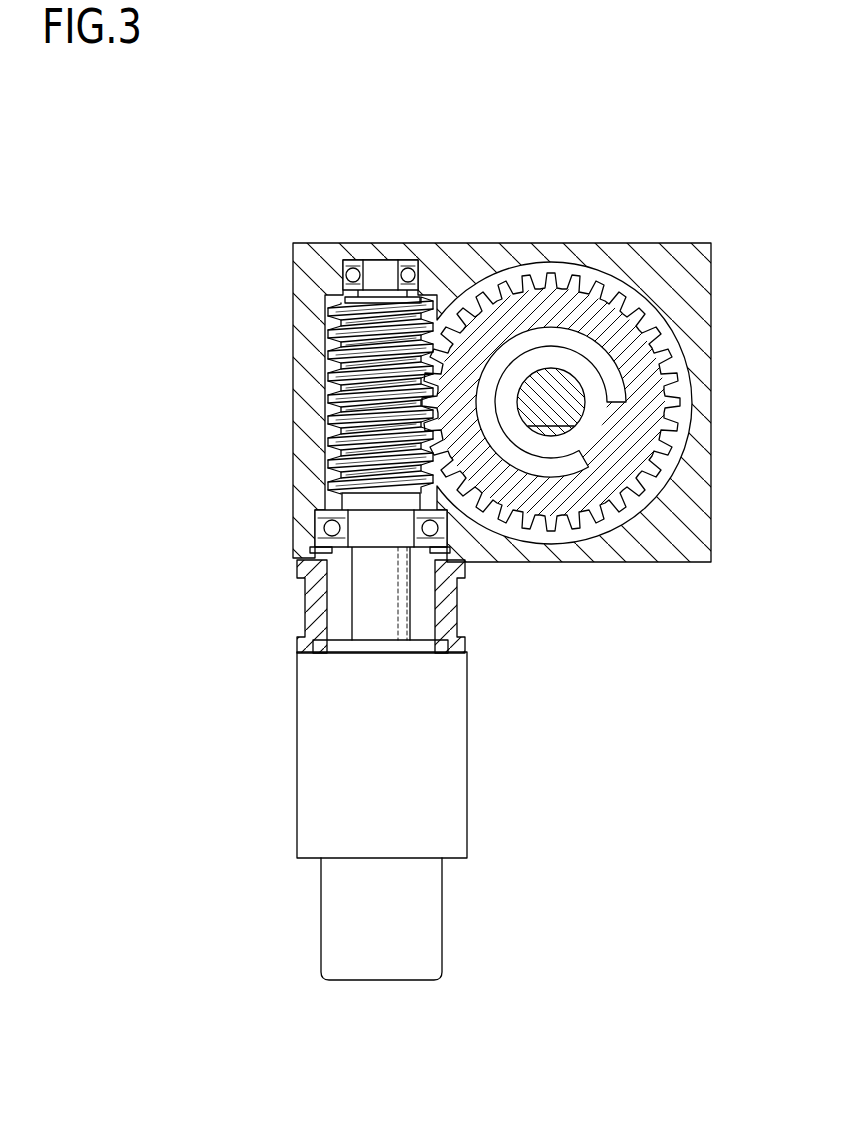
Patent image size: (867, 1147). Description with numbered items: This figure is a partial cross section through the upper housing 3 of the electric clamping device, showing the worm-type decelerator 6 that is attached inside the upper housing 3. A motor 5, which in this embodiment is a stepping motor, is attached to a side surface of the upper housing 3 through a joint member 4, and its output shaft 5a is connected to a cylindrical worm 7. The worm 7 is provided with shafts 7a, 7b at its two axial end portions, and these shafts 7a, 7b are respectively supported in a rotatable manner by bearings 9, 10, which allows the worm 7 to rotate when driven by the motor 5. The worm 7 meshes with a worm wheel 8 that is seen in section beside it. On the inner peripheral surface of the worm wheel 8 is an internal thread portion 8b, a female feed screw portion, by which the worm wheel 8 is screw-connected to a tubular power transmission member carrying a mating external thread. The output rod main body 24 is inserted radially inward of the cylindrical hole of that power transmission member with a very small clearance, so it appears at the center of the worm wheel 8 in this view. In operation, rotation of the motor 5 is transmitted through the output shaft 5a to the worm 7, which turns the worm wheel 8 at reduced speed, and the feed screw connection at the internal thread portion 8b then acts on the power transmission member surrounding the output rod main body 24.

The upper housing 3 is at (714, 253).
The joint member 4 is at (455, 592).
The motor 5 is at (417, 793).
The output shaft 5a is at (413, 638).
The decelerator 6 is at (502, 192).
The worm 7 is at (354, 414).
The shaft 7a is at (414, 252).
The shaft 7b is at (370, 600).
The worm wheel 8 is at (603, 360).
The internal thread portion 8b is at (615, 392).
The bearing 9 is at (343, 283).
The bearing 10 is at (315, 533).
The output rod main body 24 is at (551, 402).